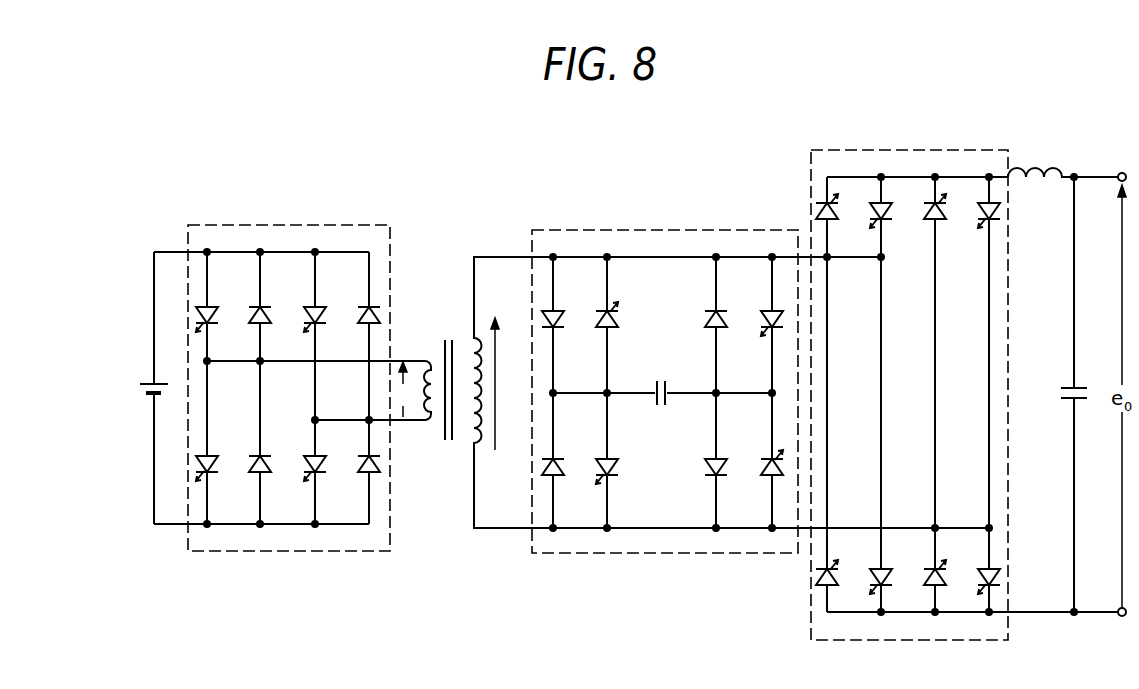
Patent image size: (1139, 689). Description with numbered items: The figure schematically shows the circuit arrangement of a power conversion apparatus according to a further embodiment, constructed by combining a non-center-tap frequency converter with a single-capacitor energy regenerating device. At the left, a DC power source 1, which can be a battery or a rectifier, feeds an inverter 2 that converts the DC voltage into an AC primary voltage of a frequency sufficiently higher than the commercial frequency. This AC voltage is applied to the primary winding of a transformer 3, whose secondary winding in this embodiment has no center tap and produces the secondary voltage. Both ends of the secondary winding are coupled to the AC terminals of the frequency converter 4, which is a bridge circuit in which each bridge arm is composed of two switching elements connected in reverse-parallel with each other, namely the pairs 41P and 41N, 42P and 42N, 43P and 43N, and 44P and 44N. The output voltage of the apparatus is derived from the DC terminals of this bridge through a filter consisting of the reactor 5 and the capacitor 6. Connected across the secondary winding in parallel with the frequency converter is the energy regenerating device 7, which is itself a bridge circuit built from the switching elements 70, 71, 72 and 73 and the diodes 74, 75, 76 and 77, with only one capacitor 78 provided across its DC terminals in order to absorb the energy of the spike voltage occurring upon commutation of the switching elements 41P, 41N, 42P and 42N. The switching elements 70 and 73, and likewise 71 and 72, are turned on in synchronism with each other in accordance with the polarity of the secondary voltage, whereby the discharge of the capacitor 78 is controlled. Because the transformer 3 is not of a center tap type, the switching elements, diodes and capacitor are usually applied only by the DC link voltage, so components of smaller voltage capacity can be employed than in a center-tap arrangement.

The DC power source 1 is at (143, 383).
The inverter 2 is at (299, 211).
The transformer 3 is at (436, 322).
The frequency converter 4 is at (908, 124).
The reactor 5 is at (1038, 166).
The capacitor 6 is at (1089, 392).
The energy regenerating device 7 is at (672, 211).
The switching element 70 is at (615, 316).
The switching element 71 is at (615, 476).
The switching element 72 is at (762, 316).
The switching element 73 is at (762, 476).
The diode 74 is at (562, 312).
The diode 75 is at (561, 476).
The diode 76 is at (706, 316).
The diode 77 is at (706, 476).
The capacitor 78 is at (661, 405).
The switching element 41P is at (834, 222).
The switching element 41N is at (888, 222).
The switching element 43N is at (942, 222).
The switching element 43P is at (995, 222).
The switching element 42N is at (834, 566).
The switching element 42P is at (887, 566).
The switching element 44P is at (940, 566).
The switching element 44N is at (995, 566).